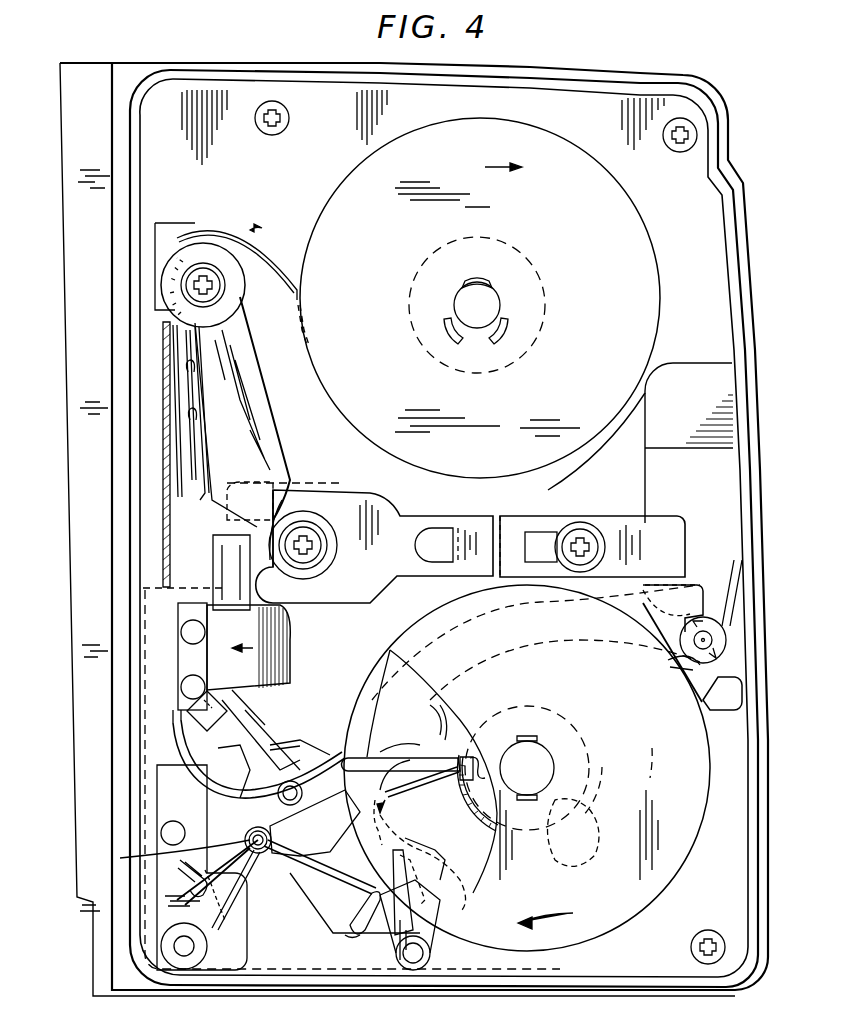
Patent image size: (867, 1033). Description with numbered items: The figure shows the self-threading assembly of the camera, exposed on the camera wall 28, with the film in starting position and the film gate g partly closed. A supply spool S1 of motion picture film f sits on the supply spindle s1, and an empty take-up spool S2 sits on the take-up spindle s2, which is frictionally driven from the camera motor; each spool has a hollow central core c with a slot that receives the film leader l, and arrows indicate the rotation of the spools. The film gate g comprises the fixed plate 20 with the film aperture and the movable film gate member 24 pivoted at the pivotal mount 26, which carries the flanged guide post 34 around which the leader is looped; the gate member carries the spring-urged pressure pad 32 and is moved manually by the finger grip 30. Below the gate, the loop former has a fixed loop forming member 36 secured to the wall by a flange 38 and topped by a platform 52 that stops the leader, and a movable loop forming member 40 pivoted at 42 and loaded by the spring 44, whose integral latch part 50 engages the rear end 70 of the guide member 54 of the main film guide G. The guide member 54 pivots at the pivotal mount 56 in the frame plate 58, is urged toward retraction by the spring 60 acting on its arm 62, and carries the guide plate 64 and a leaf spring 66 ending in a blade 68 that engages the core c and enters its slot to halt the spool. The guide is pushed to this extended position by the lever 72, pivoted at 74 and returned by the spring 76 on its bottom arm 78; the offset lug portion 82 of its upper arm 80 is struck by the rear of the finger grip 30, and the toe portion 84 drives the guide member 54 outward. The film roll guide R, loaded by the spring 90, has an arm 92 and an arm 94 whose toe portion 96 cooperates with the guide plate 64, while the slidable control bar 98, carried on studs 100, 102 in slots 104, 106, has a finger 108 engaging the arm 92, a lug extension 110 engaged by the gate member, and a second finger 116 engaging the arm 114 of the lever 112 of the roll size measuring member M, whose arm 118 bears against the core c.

The fixed plate 20 is at (165, 497).
The movable film gate member 24 is at (240, 343).
The pivotal mount 26 is at (222, 278).
The camera wall 28 is at (222, 98).
The finger grip 30 is at (285, 627).
The pressure pad 32 is at (200, 478).
The flanged guide post 34 is at (215, 262).
The fixed loop forming member 36 is at (175, 722).
The flange 38 is at (185, 660).
The movable loop forming member 40 is at (200, 805).
The pivot 42 is at (245, 836).
The spring 44 is at (120, 857).
The latch part 50 is at (287, 847).
The platform 52 is at (232, 590).
The guide member 54 is at (405, 842).
The pivotal mount 56 is at (417, 965).
The frame plate 58 is at (240, 960).
The spring 60 is at (392, 937).
The arm 62 is at (440, 895).
The guide plate 64 is at (358, 758).
The leaf spring 66 is at (400, 790).
The blade 68 is at (468, 776).
The rear end 70 is at (330, 760).
The lever 72 is at (265, 715).
The pivot 74 is at (285, 745).
The spring 76 is at (282, 880).
The bottom arm 78 is at (287, 877).
The upper arm 80 is at (262, 705).
The offset lug portion 82 is at (200, 728).
The toe portion 84 is at (352, 938).
The spring 90 is at (740, 562).
The arm 92 is at (722, 598).
The arm 94 is at (486, 660).
The toe portion 96 is at (386, 758).
The slidable control bar 98 is at (372, 512).
The stud 100 is at (312, 525).
The stud 102 is at (578, 532).
The slot 104 is at (285, 498).
The slot 106 is at (542, 532).
The finger 108 is at (697, 582).
The lug extension 110 is at (257, 475).
The lever 112 is at (664, 748).
The arm 114 is at (742, 690).
The second finger 116 is at (670, 667).
The arm 118 is at (578, 862).
The motion picture film f is at (283, 252).
The film gate g is at (100, 372).
The film leader l is at (183, 462).
The supply spool S1 is at (640, 232).
The supply spindle s1 is at (492, 302).
The take-up spool S2 is at (695, 805).
The take-up spindle s2 is at (540, 762).
The film roll guide R is at (440, 705).
The main film guide G is at (385, 790).
The head a is at (471, 768).
The hollow central core c is at (468, 820).
The roll size measuring member M is at (604, 851).